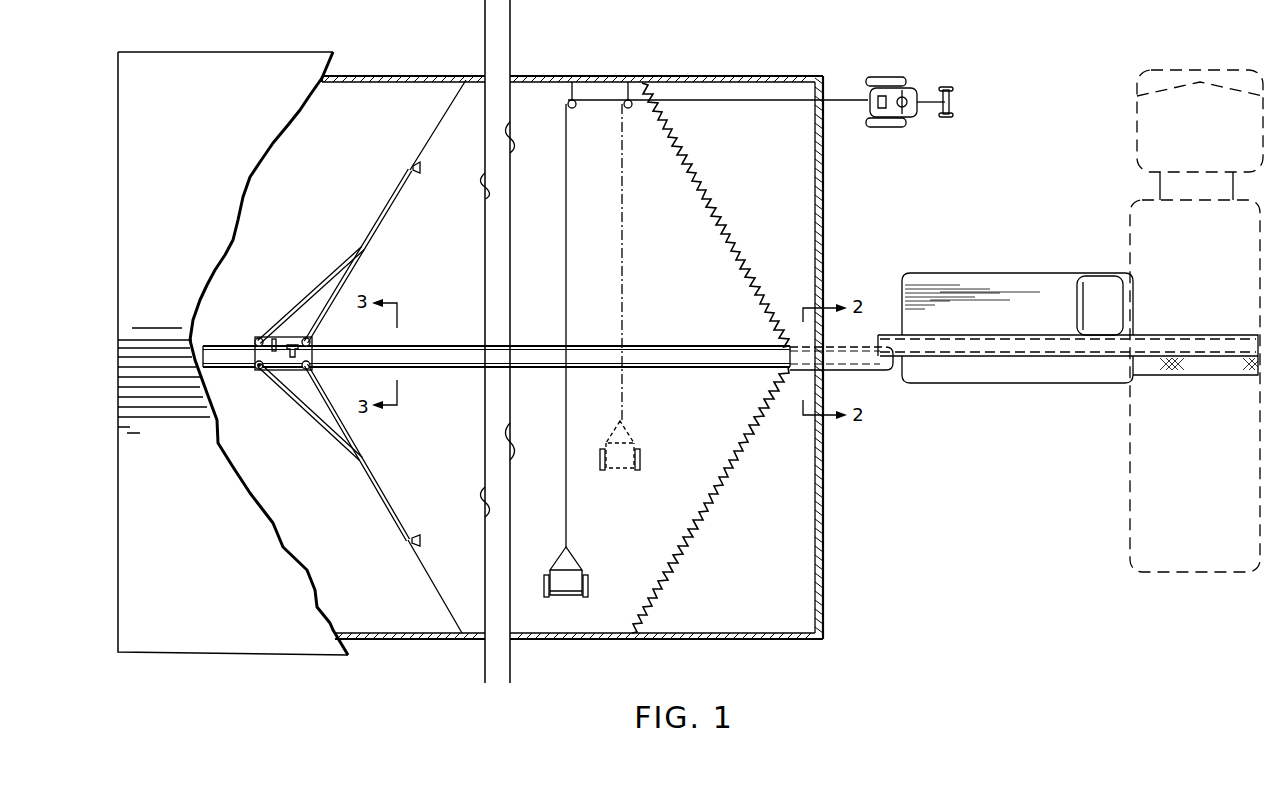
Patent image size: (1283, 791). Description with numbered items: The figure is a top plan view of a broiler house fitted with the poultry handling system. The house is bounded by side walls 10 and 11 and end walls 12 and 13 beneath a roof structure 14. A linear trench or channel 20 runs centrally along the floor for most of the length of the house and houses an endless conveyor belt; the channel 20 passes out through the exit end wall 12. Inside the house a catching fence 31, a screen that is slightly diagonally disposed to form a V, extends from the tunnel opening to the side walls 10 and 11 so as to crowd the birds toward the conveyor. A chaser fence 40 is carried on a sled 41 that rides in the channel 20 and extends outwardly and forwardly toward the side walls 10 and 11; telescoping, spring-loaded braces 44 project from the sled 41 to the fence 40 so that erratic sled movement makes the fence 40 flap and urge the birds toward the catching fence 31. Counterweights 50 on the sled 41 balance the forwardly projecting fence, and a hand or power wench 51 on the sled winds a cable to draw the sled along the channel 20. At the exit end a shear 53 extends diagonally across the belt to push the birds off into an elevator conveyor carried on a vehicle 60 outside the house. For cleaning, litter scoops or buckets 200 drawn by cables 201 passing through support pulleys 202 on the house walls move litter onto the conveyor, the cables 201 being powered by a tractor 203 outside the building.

The side wall 10 is at (425, 76).
The side wall 11 is at (405, 640).
The end wall 12 is at (824, 558).
The end wall 13 is at (118, 488).
The roof structure 14 is at (203, 63).
The trench or channel 20 is at (229, 332).
The catching fence 31 is at (730, 224).
The chaser fence 40 is at (396, 192).
The sled 41 is at (281, 369).
The braces 44 is at (323, 284).
The counterweights 50 is at (257, 367).
The hand or power wench 51 is at (292, 362).
The shear 53 is at (893, 374).
The vehicle 60 is at (1000, 269).
The litter scoops or buckets 200 is at (563, 578).
The cables 201 is at (567, 502).
The support pulleys 202 is at (574, 104).
The tractor 203 is at (902, 96).